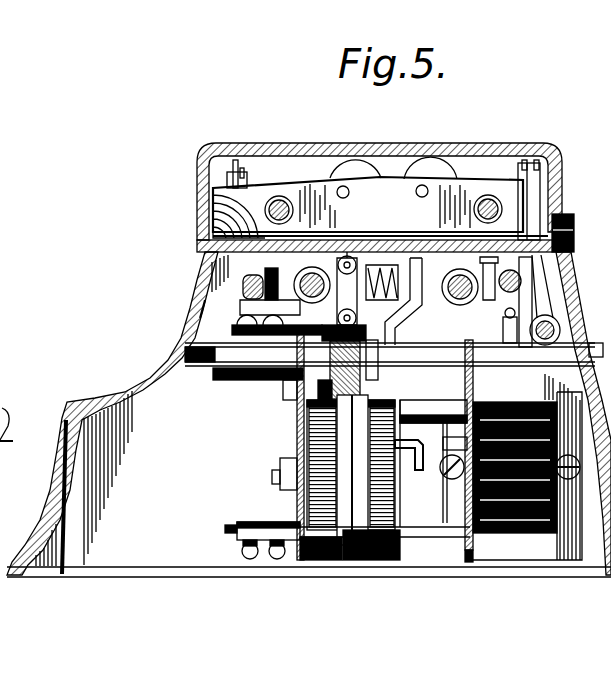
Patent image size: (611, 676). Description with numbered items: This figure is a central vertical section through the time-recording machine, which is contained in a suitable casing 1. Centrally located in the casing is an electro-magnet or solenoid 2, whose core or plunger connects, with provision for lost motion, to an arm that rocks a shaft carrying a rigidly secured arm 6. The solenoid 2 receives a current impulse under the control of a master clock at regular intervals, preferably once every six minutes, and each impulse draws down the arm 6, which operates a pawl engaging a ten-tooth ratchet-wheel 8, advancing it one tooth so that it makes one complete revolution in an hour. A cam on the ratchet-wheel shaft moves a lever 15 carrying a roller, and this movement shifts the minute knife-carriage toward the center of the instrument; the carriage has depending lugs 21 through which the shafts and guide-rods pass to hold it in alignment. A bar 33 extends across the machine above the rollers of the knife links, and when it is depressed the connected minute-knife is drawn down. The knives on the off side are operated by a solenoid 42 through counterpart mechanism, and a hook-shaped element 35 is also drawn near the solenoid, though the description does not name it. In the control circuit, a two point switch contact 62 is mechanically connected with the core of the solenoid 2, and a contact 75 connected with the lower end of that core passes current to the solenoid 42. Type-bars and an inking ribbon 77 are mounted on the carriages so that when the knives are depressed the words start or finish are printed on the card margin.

The casing 1 is at (127, 396).
The solenoid 2 is at (298, 452).
The arm 6 is at (296, 374).
The ten-tooth ratchet-wheel 8 is at (300, 413).
The lever 15 is at (386, 331).
The depending lugs 21 is at (320, 262).
The bar 33 is at (243, 291).
The hook 35 is at (404, 467).
The solenoid 42 is at (518, 507).
The contact 62 is at (200, 320).
The contact 75 is at (310, 540).
The type-bars and inking ribbon 77 is at (271, 180).